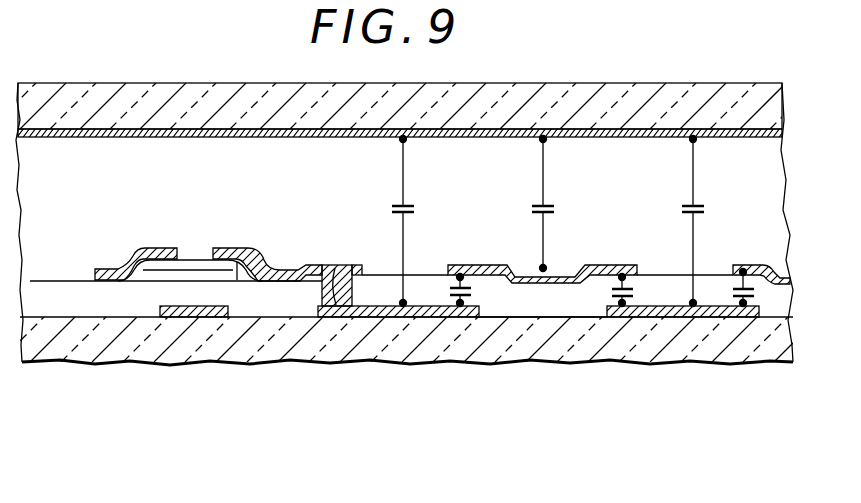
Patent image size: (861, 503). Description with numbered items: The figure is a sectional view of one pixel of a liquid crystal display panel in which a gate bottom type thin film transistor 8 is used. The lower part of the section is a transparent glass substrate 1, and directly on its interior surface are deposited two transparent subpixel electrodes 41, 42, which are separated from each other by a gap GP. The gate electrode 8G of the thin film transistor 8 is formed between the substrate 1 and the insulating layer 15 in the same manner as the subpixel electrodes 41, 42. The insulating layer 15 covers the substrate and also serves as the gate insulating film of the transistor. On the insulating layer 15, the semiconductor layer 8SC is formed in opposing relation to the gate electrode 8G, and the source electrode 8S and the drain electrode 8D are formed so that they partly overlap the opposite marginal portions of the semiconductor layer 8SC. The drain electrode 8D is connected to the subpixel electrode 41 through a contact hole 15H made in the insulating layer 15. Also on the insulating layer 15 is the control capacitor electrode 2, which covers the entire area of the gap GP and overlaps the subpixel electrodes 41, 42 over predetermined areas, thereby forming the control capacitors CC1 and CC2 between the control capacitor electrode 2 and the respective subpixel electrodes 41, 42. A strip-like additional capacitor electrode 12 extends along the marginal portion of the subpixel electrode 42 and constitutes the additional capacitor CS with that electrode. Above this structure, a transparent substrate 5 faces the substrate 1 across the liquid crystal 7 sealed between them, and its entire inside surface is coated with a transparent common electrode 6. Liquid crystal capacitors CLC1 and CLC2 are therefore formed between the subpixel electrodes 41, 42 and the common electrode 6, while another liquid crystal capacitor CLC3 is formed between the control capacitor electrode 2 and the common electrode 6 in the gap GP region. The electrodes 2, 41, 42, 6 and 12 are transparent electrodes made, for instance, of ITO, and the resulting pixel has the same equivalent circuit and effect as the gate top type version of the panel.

The transparent substrate 1 is at (790, 340).
The control capacitor electrode 2 is at (578, 284).
The transparent substrate 5 is at (770, 97).
The transparent common electrode 6 is at (782, 133).
The liquid crystal 7 is at (763, 192).
The thin film transistor 8 is at (185, 299).
The source electrode 8S is at (143, 248).
The drain electrode 8D is at (250, 248).
The gate electrode 8G is at (170, 318).
The semiconductor layer 8SC is at (240, 263).
The additional capacitor electrode 12 is at (773, 270).
The first insulating layer 15 is at (797, 303).
The contact hole 15H is at (333, 308).
The subpixel electrode 41 is at (427, 318).
The subpixel electrode 42 is at (632, 313).
The gap GP is at (540, 308).
The liquid crystal capacitor CLC1 is at (417, 207).
The liquid crystal capacitor CLC2 is at (557, 207).
The liquid crystal capacitor CLC3 is at (703, 205).
The control capacitor CC1 is at (472, 290).
The control capacitor CC2 is at (607, 293).
The additional capacitor CS is at (758, 292).